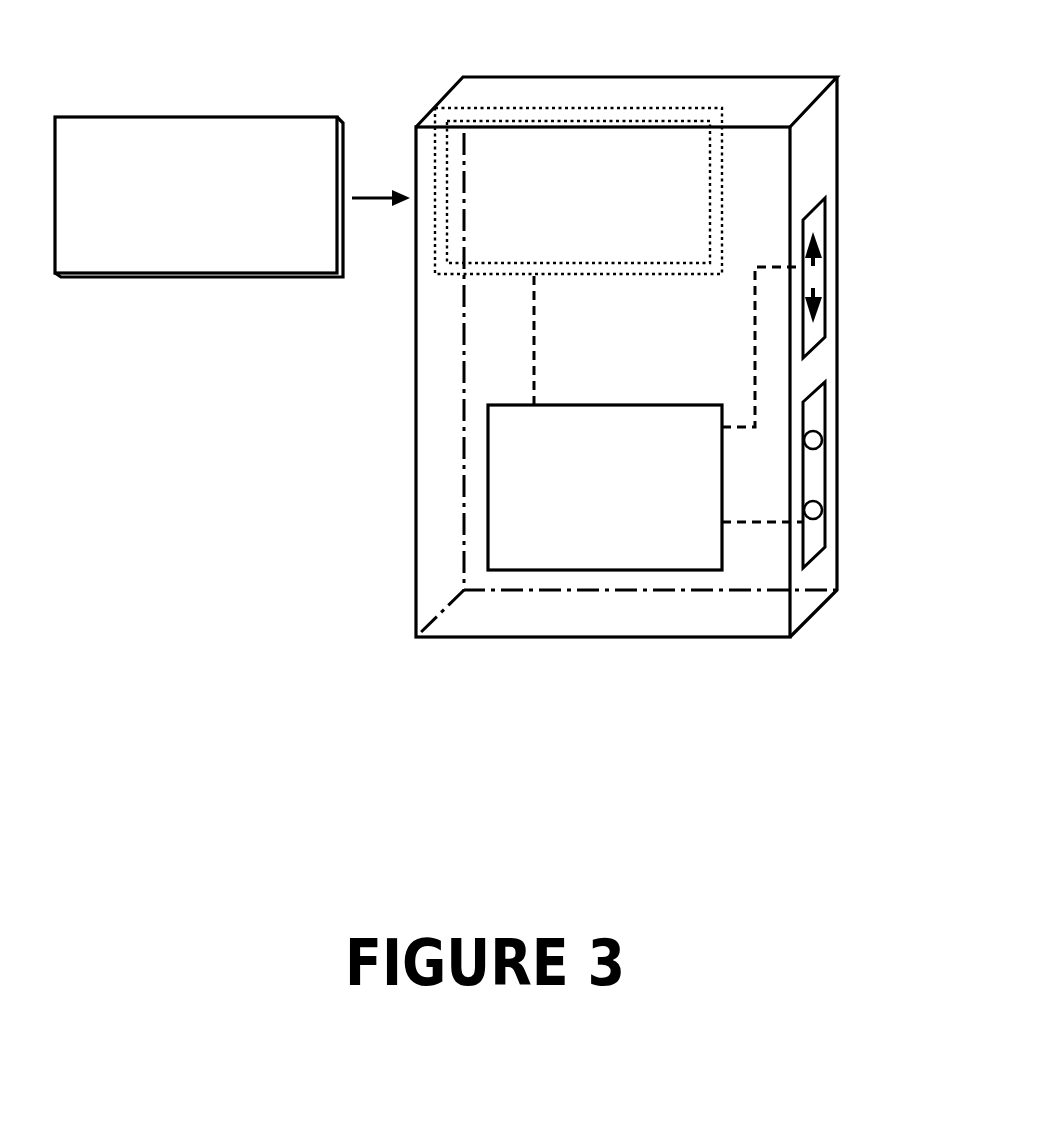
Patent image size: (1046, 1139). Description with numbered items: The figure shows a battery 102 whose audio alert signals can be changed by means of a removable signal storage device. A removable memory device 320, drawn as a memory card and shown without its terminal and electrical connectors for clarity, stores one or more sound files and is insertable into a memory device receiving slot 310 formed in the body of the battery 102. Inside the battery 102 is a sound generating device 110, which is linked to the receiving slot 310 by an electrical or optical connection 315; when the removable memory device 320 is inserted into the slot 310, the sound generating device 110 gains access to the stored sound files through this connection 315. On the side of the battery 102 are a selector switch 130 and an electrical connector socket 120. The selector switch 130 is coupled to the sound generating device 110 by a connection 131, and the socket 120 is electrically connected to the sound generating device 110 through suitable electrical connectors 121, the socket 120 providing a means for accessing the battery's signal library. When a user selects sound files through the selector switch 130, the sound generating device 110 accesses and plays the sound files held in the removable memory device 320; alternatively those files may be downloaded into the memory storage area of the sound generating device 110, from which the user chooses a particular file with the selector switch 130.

The battery 102 is at (510, 640).
The memory device receiving slot 310 is at (515, 108).
The electrical or optical connection 315 is at (534, 390).
The sound generating device 110 is at (534, 570).
The connection between up/down control and sound generating device 131 is at (755, 380).
The electrical connectors 121 is at (777, 522).
The selector switch 130 is at (827, 278).
The electrical connector socket 120 is at (827, 500).
The removable memory device 320 is at (267, 113).